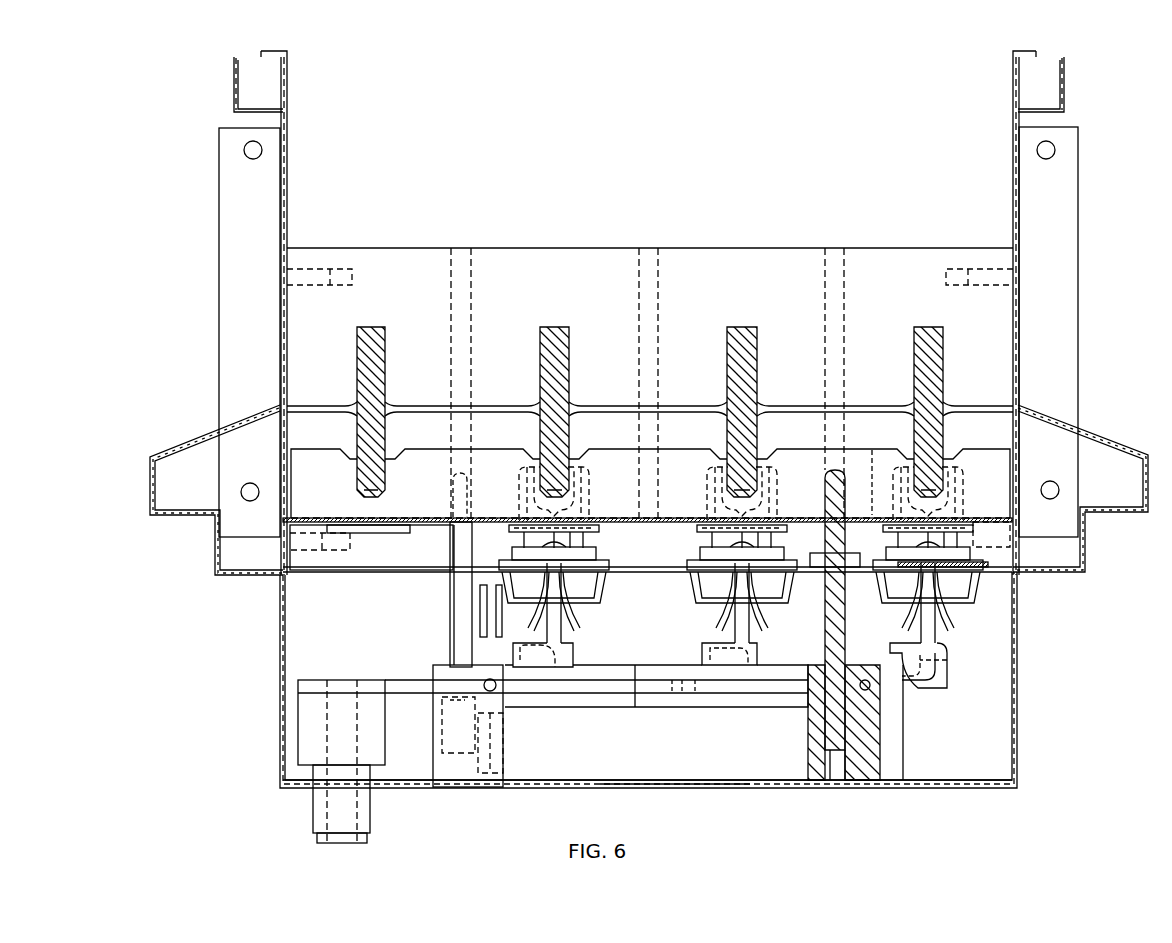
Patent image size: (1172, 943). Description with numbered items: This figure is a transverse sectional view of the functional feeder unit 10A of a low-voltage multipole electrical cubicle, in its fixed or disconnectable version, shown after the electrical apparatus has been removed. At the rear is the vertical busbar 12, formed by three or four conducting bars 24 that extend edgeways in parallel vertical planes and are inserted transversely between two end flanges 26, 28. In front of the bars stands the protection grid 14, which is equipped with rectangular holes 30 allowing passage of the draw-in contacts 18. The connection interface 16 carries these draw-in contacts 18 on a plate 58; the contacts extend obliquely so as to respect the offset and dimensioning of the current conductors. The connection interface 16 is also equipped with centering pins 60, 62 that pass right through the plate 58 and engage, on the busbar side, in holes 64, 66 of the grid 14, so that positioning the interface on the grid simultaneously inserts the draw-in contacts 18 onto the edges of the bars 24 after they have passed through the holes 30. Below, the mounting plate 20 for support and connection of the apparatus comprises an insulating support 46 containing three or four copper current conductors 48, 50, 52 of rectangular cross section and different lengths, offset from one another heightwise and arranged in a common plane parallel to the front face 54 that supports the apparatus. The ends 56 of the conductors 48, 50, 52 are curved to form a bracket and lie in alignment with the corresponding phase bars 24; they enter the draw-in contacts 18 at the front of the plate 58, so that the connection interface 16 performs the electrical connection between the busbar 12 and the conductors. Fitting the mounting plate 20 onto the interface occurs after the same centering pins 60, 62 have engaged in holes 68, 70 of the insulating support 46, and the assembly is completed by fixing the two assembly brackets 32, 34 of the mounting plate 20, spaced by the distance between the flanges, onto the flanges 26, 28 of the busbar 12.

The functional feeder unit 10A is at (1045, 650).
The vertical busbar 12 is at (538, 247).
The protection grid 14 is at (292, 518).
The connection interface 16 is at (305, 578).
The draw-in contacts 18 is at (563, 478).
The mounting plate 20 is at (862, 786).
The conducting bars 24 is at (368, 330).
The end flange 26 is at (241, 250).
The end flange 28 is at (1065, 250).
The rectangular holes 30 is at (585, 520).
The assembly bracket 32 is at (222, 575).
The assembly bracket 34 is at (1062, 575).
The insulating support 46 is at (828, 772).
The current conductor 48 is at (376, 680).
The current conductor 50 is at (583, 688).
The current conductor 52 is at (785, 688).
The front face 54 is at (657, 780).
The ends of the current conductors 56 is at (556, 635).
The plate 58 is at (620, 574).
The centering pin 60 is at (453, 604).
The centering pin 62 is at (847, 625).
The hole 64 is at (468, 517).
The hole 66 is at (845, 475).
The hole 68 is at (450, 665).
The hole 70 is at (885, 731).